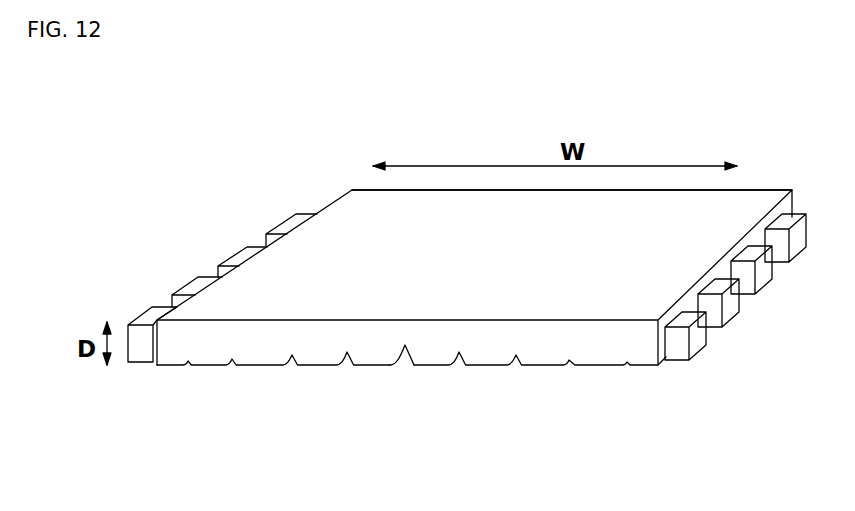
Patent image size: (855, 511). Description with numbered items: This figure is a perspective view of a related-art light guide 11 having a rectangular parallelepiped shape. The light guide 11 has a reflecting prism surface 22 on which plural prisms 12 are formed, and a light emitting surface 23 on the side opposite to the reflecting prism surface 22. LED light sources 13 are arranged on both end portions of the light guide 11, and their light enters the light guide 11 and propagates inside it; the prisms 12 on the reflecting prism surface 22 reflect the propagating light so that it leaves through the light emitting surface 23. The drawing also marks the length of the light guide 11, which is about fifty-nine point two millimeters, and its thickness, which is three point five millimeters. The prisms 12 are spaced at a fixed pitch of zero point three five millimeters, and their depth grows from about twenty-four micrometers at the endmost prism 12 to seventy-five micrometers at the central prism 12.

The light guide 11 is at (604, 352).
The prism 12 is at (404, 352).
The LED light source 13 is at (140, 343).
The reflecting prism surface 22 is at (375, 367).
The light emitting surface 23 is at (483, 210).